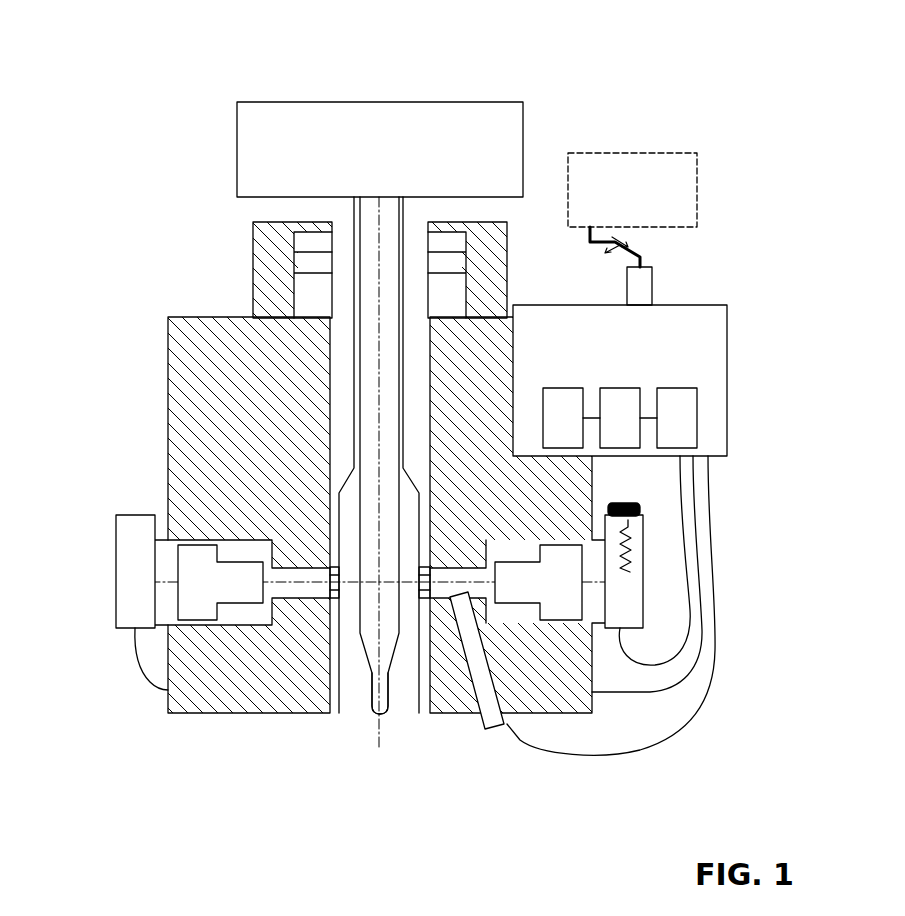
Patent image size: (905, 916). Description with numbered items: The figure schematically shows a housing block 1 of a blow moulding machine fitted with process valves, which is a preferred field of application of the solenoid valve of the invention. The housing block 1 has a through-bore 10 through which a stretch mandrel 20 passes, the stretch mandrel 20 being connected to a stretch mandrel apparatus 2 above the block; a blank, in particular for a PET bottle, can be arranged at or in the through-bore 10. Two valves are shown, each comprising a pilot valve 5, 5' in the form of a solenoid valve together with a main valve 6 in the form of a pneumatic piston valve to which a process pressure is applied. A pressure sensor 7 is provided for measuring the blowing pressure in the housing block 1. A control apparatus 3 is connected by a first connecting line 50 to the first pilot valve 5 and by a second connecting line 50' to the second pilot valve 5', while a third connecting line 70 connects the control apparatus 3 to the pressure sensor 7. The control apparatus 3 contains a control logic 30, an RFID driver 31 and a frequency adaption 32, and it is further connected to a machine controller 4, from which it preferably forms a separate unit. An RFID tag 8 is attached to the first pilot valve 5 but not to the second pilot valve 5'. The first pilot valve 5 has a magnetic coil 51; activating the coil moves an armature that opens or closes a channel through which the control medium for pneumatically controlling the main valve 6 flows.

The housing block 1 is at (185, 336).
The stretch mandrel apparatus 2 is at (378, 118).
The control apparatus 3 is at (702, 333).
The machine controller 4 is at (678, 192).
The first pilot valve 5 is at (707, 578).
The second pilot valve 5' is at (107, 667).
The main valve 6 is at (198, 603).
The pressure sensor 7 is at (487, 720).
The RFID tag 8 is at (642, 506).
The through-bore 10 is at (348, 707).
The stretch mandrel 20 is at (370, 232).
The control logic 30 is at (567, 437).
The RFID driver 31 is at (628, 408).
The frequency adaption 32 is at (682, 426).
The first connecting line 50 is at (716, 580).
The second connecting line 50' is at (464, 637).
The magnetic coil 51 is at (630, 570).
The third connecting line 70 is at (653, 733).